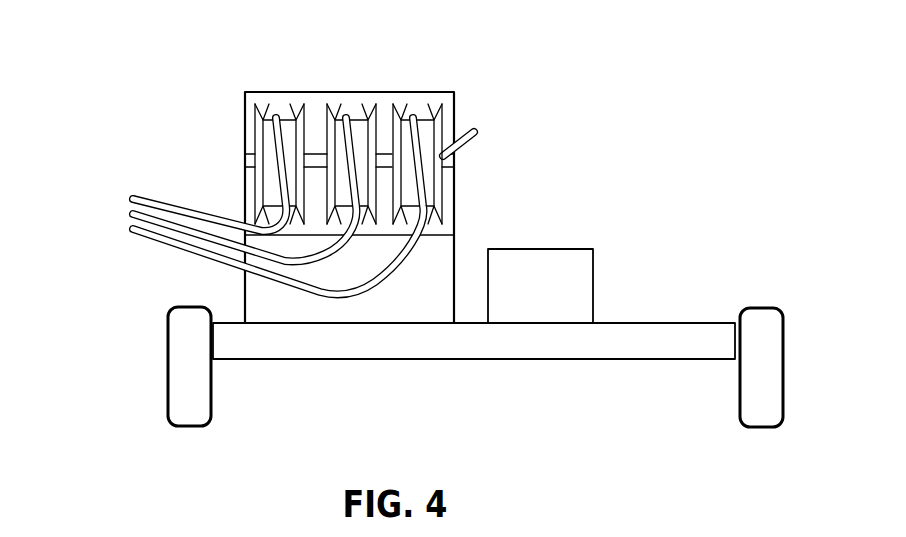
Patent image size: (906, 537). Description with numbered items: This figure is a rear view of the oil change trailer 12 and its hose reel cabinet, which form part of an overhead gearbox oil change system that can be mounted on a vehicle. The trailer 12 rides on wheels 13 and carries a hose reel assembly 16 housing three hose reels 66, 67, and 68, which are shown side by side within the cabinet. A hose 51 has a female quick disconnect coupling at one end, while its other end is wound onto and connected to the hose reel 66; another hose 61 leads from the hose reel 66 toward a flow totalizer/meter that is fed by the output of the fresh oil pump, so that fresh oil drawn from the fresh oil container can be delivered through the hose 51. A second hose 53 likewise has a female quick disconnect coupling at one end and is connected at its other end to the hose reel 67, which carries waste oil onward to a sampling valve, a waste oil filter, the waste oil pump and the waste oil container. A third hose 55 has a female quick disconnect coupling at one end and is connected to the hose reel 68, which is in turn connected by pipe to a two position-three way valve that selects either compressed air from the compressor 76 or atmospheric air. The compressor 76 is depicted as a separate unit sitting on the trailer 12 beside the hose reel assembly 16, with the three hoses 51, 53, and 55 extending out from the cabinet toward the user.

The trailer 12 is at (366, 340).
The wheels 13 is at (760, 322).
The hose reel assembly 16 is at (432, 272).
The hose 51 is at (155, 240).
The hose 53 is at (143, 218).
The hose 55 is at (153, 195).
The hose 61 is at (465, 130).
The hose reel 66 is at (402, 107).
The hose reel 67 is at (333, 107).
The hose reel 68 is at (267, 107).
The compressor 76 is at (557, 282).